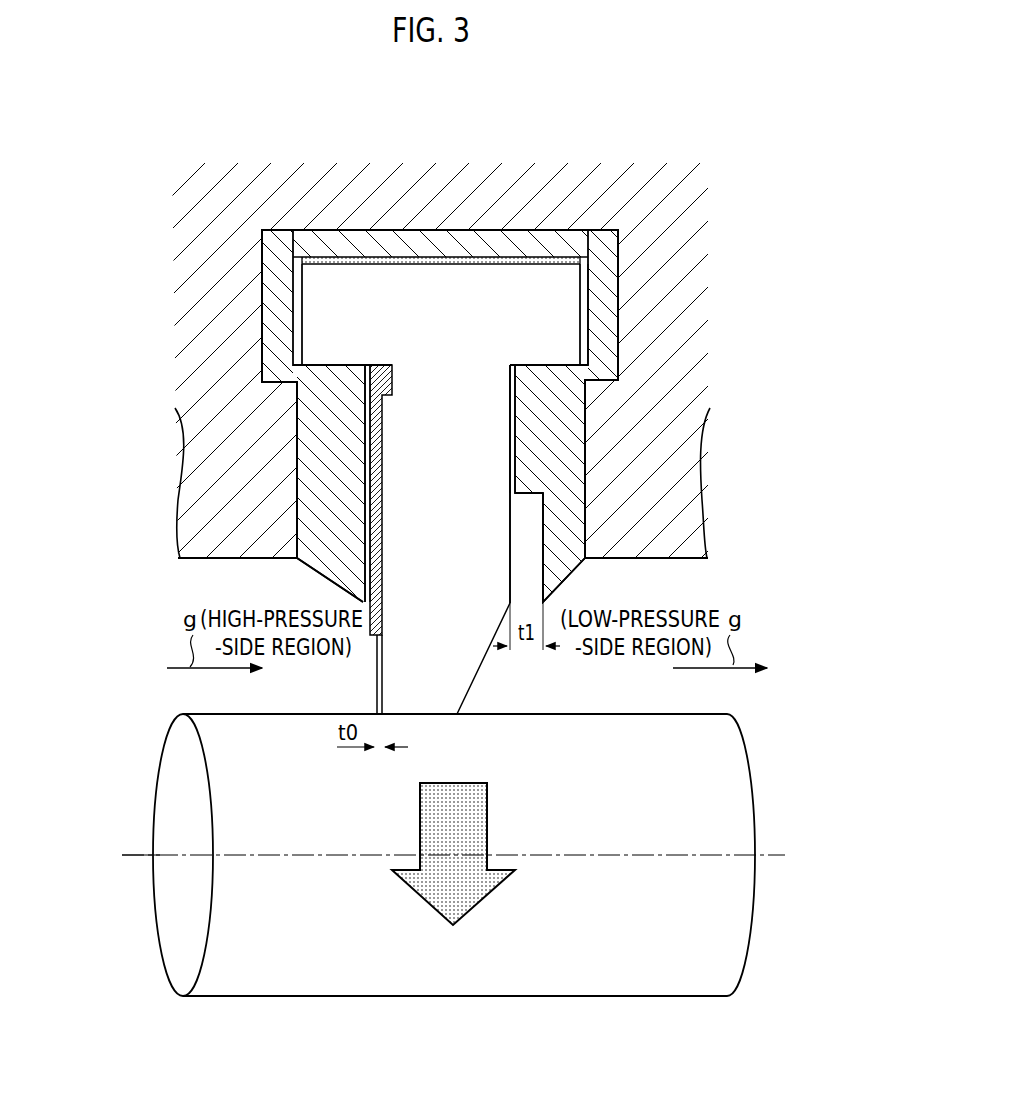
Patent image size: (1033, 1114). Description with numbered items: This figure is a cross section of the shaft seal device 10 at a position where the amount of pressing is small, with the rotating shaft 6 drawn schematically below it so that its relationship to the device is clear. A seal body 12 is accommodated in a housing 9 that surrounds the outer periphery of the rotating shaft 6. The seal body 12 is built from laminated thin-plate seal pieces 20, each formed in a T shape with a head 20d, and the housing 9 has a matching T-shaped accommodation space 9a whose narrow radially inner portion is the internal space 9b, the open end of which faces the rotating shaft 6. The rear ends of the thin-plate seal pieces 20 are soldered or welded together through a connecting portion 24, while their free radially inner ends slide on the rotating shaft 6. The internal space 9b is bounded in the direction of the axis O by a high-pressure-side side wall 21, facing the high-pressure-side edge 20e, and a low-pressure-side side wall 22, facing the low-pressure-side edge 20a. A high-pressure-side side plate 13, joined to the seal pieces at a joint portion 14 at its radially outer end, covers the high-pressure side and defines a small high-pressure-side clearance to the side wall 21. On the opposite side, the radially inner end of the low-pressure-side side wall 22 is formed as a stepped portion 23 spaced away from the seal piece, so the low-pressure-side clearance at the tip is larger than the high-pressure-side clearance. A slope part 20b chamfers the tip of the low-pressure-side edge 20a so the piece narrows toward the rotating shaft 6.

The rotating shaft 6 is at (637, 980).
The housing 9 is at (607, 290).
The accommodation space 9a is at (585, 322).
The internal space 9b is at (513, 465).
The shaft seal device 10 is at (713, 128).
The seal body 12 is at (440, 311).
The high-pressure-side side plate 13 is at (370, 512).
The joint portion 14 is at (375, 397).
The thin-plate seal piece 20 is at (473, 308).
The low-pressure-side edge 20a is at (515, 397).
The slope part 20b is at (477, 683).
The head 20d is at (315, 312).
The high-pressure-side edge 20e is at (373, 548).
The high-pressure-side side wall 21 is at (315, 470).
The low-pressure-side side wall 22 is at (567, 437).
The stepped portion 23 is at (563, 572).
The connecting portion 24 is at (385, 255).
The axis O is at (130, 857).